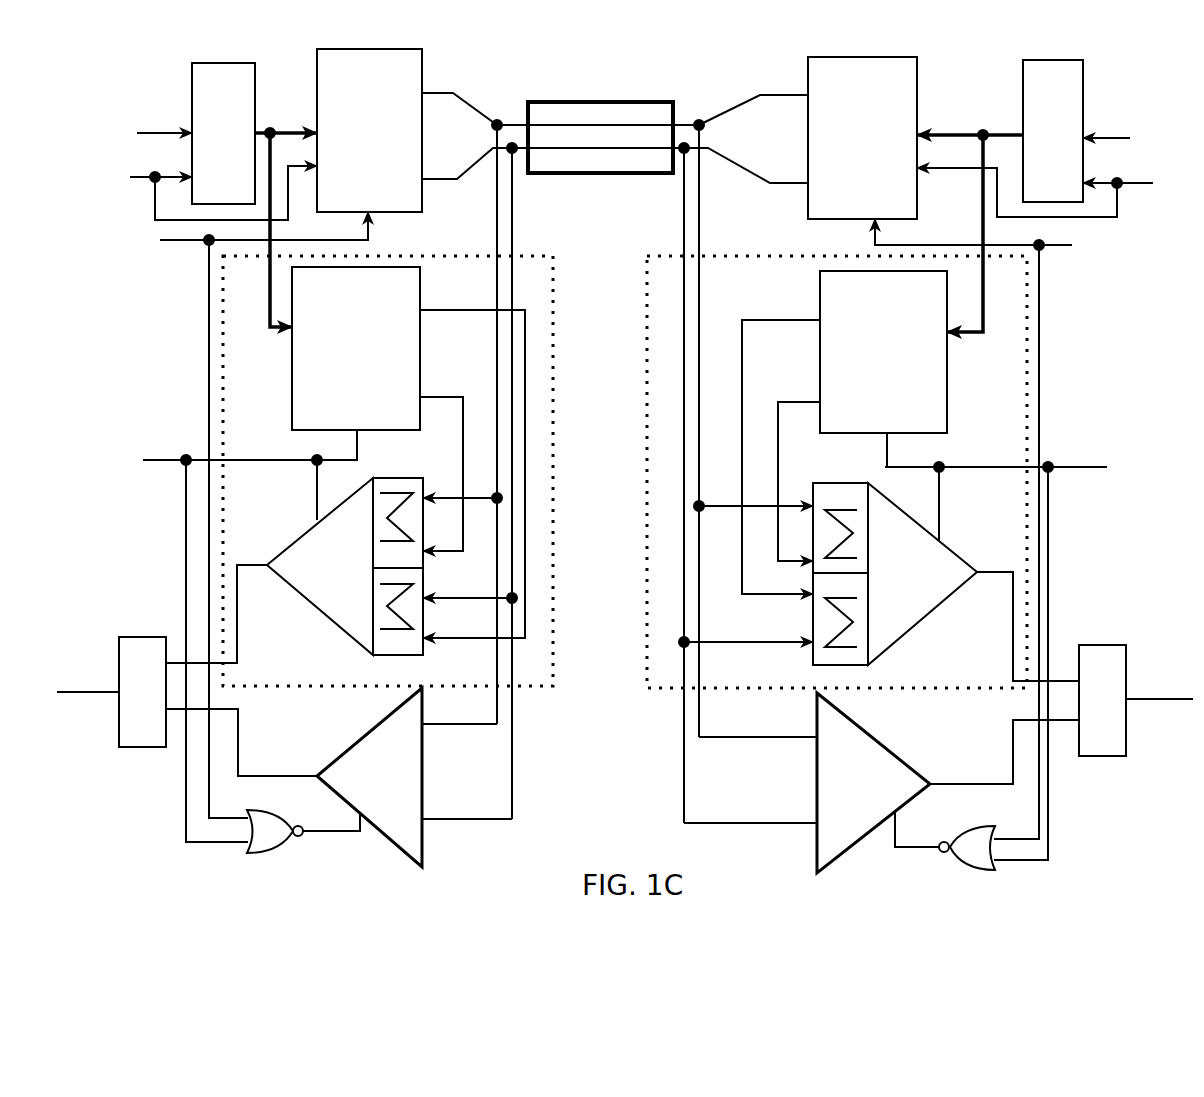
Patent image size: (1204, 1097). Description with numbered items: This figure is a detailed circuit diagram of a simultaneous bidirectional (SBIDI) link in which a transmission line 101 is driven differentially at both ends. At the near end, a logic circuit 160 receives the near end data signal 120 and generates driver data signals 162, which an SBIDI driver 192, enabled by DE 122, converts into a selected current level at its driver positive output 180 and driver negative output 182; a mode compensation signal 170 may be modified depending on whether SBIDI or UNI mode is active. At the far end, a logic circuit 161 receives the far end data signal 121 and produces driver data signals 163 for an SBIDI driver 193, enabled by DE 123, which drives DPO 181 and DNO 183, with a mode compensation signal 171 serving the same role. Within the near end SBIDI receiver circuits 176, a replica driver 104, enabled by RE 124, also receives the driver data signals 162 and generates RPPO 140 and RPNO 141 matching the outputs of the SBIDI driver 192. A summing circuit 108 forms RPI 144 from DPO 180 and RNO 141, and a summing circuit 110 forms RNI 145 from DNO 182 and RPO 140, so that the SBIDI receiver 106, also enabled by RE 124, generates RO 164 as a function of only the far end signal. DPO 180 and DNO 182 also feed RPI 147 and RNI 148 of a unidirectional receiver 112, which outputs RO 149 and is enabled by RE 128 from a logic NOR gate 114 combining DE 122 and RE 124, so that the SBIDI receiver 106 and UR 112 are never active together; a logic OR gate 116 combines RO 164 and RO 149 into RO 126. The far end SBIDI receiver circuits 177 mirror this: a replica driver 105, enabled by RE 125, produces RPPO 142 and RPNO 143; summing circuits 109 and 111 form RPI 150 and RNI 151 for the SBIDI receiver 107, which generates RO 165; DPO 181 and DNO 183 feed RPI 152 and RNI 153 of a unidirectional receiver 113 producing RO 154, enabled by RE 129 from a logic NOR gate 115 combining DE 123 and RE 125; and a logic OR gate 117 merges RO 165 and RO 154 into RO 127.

The transmission line 101 is at (610, 102).
The replica driver 104 is at (356, 348).
The replica driver 105 is at (883, 352).
The near end SBIDI receiver 106 is at (305, 603).
The far end SBIDI receiver 107 is at (940, 610).
The summing circuit 108 is at (385, 478).
The summing circuit 109 is at (830, 483).
The summing circuit 110 is at (415, 650).
The summing circuit 111 is at (810, 658).
The unidirectional receiver 112 is at (412, 843).
The unidirectional receiver 113 is at (815, 850).
The logic NOR gate 114 is at (262, 858).
The logic NOR gate 115 is at (985, 878).
The logic OR gate 116 is at (128, 748).
The logic OR gate 117 is at (1088, 645).
The near end data signal 120 is at (185, 125).
The far end data signal 121 is at (1087, 122).
The driver enable (DE) 122 is at (185, 250).
The driver enable (DE) 123 is at (1045, 250).
The receiver enable (RE) 124 is at (235, 460).
The receiver enable (RE) 125 is at (1063, 462).
The receiver output (RO) 126 is at (83, 622).
The receiver output (RO) 127 is at (1140, 690).
The receiver enable (RE) 128 is at (335, 822).
The receiver enable (RE) 129 is at (910, 845).
The replica positive output (RPPO) 140 is at (446, 310).
The replica negative output (RPNO) 141 is at (430, 395).
The replica positive output (RPPO) 142 is at (745, 318).
The replica negative output (RPNO) 143 is at (778, 400).
The receiver positive input (RPI) 144 is at (355, 520).
The receiver negative input (RNI) 145 is at (355, 613).
The receiver positive input (RPI) 147 is at (440, 728).
The receiver negative input (RNI) 148 is at (438, 818).
The receiver output (RO) 149 is at (267, 767).
The receiver positive input (RPI) 150 is at (878, 522).
The receiver negative input (RNI) 151 is at (885, 625).
The receiver positive input (RPI) 152 is at (742, 738).
The receiver negative input (RNI) 153 is at (722, 820).
The receiver output (RO) 154 is at (937, 766).
The logic circuit 160 is at (223, 133).
The logic circuit 161 is at (1053, 131).
The driver data signals 162 is at (270, 278).
The driver data signals 163 is at (980, 340).
The receiver output (RO) 164 is at (238, 558).
The receiver output (RO) 165 is at (993, 578).
The mode compensation signal 170 is at (152, 185).
The mode compensation signal 171 is at (1120, 190).
The SBIDI receiver circuits 176 is at (553, 508).
The SBIDI receiver circuits 177 is at (640, 500).
The driver positive output (DPO) 180 is at (460, 100).
The driver positive output (DPO) 181 is at (725, 118).
The driver negative output (DNO) 182 is at (460, 177).
The driver negative output (DNO) 183 is at (735, 172).
The SBIDI driver 192 is at (315, 98).
The SBIDI driver 193 is at (808, 205).